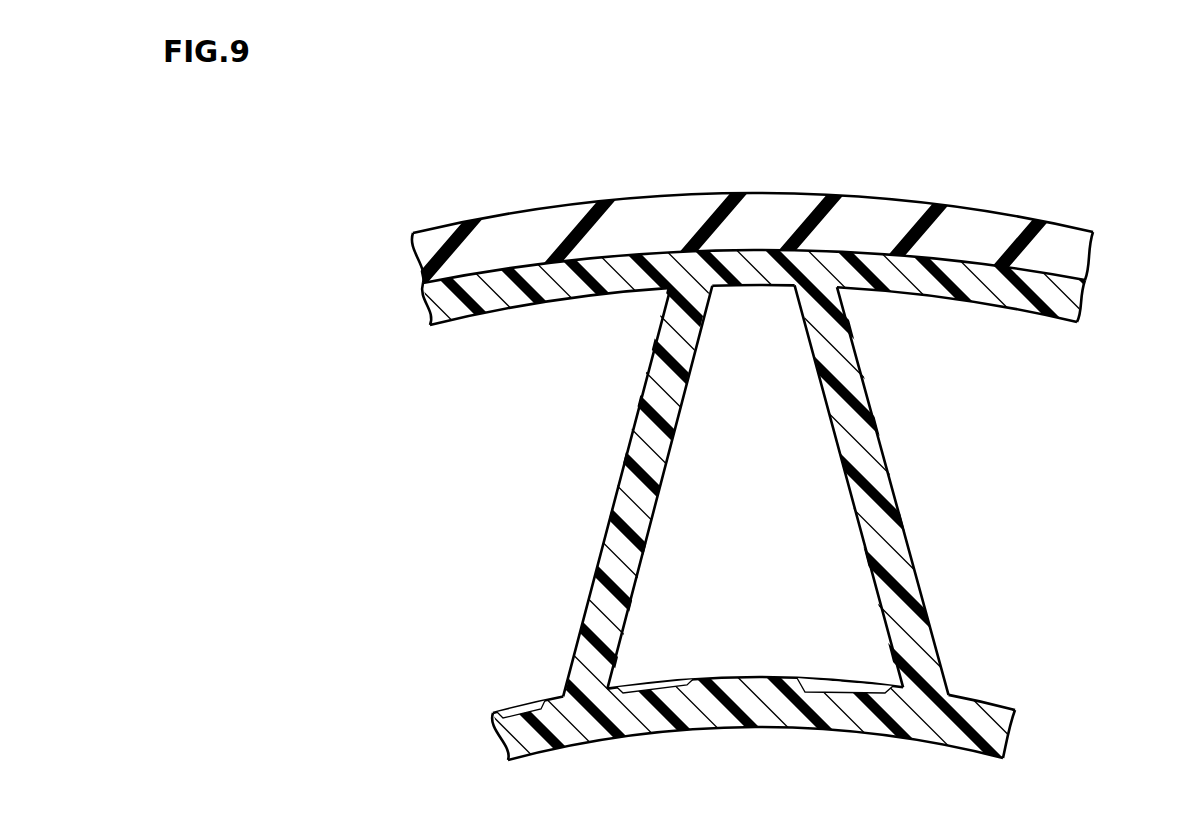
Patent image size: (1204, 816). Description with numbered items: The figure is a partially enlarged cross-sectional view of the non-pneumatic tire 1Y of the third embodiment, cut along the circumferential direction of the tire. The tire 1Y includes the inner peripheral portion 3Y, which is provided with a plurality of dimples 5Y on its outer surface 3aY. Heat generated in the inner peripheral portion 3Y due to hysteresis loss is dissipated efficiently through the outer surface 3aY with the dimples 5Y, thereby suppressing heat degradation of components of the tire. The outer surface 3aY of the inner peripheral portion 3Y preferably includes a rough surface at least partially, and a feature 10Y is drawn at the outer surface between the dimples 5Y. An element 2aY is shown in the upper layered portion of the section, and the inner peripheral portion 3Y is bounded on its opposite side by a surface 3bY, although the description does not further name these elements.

The non-pneumatic tire 1Y is at (838, 163).
The upper layer of first member 2aY is at (687, 193).
The inner peripheral portion 3Y is at (1140, 652).
The outer surface 3aY is at (957, 693).
The lower surface portion of second member 3bY is at (940, 745).
The dimples 5Y is at (522, 710).
The intermediate adhesive layer 10Y is at (707, 680).